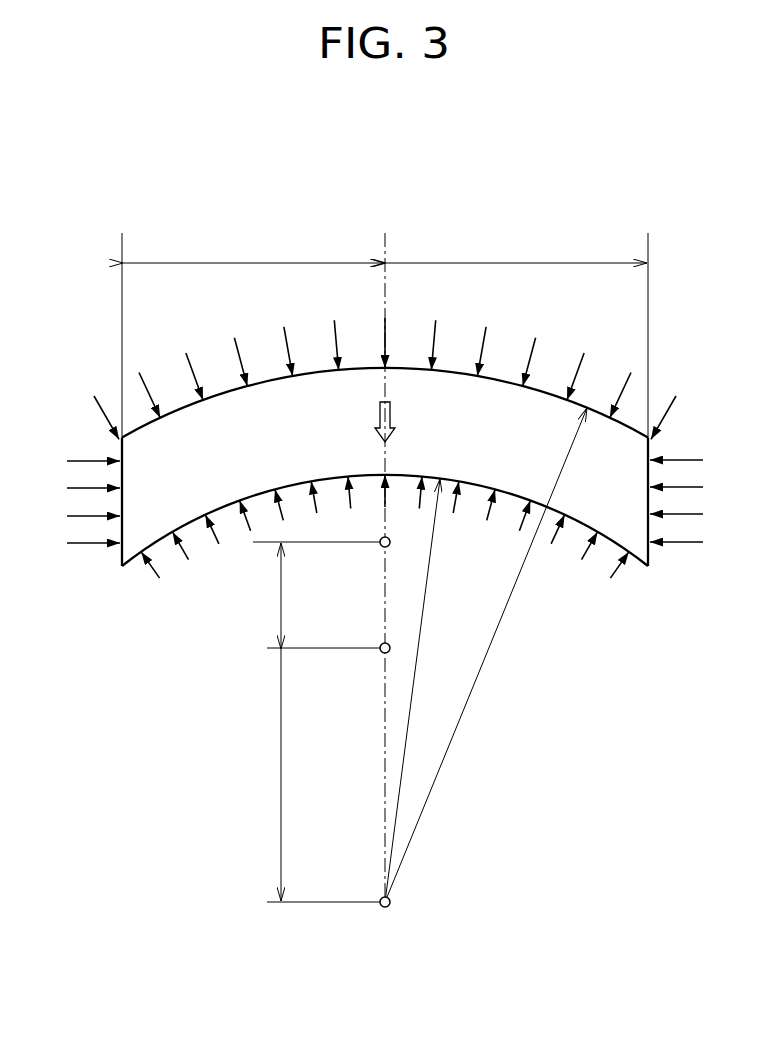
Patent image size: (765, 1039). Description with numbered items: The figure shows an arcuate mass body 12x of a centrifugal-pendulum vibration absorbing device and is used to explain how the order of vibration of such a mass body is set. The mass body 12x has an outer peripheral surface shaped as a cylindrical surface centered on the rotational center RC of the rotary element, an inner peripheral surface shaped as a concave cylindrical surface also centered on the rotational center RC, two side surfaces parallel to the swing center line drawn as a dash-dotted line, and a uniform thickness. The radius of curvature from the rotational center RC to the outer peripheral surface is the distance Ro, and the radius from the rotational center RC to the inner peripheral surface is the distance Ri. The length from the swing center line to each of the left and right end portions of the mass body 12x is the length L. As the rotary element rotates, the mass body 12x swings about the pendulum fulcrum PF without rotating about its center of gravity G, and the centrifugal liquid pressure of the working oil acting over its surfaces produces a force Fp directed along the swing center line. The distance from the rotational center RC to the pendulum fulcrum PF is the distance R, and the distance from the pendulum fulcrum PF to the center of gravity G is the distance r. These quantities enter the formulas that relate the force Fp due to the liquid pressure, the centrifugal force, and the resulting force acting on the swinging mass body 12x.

The mass body 12x is at (113, 562).
The length from the swing center line to the end portions L is at (385, 335).
The force due to the centrifugal liquid pressure Fp is at (405, 422).
The distance from the pendulum fulcrum to the center of gravity r is at (317, 595).
The distance from the rotational center to the pendulum fulcrum R is at (318, 775).
The radius of curvature of the inner peripheral surface Ri is at (412, 690).
The radius of curvature of the outer peripheral surface Ro is at (486, 655).
The center of gravity G is at (382, 548).
The pendulum fulcrum PF is at (384, 654).
The rotational center RC is at (390, 906).